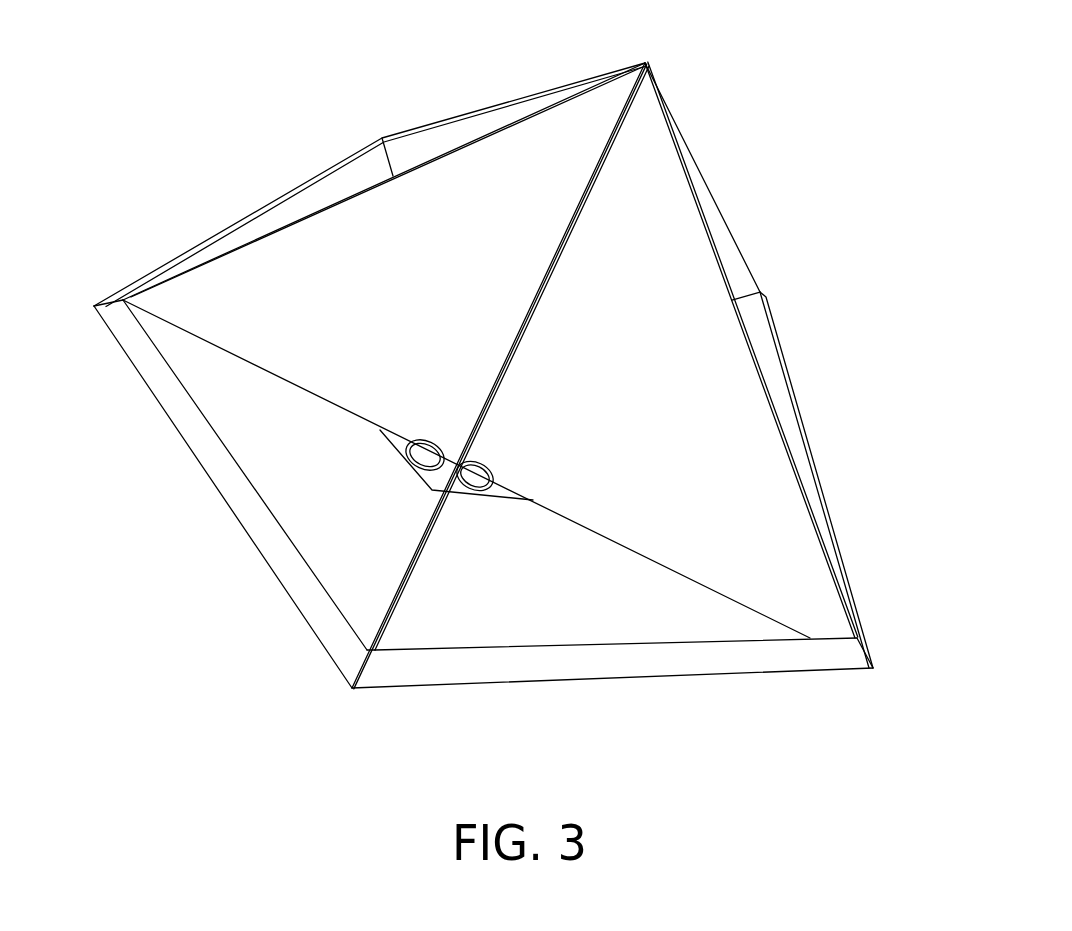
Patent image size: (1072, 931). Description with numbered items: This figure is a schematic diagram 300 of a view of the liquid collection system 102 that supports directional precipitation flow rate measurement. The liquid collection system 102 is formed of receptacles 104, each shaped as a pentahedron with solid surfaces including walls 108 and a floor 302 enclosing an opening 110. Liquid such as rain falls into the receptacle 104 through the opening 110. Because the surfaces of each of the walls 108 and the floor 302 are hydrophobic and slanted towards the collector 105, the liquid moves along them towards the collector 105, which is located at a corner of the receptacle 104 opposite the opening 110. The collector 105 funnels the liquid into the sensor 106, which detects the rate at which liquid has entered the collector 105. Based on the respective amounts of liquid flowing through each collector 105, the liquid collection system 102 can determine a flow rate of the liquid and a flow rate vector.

The schematic diagram 300 is at (569, 423).
The liquid collection system 102 is at (647, 62).
The receptacle 104 is at (624, 598).
The collector 105 is at (506, 479).
The sensor 106 is at (478, 490).
The wall 108 is at (767, 396).
The opening 110 is at (505, 630).
The floor 302 is at (495, 578).